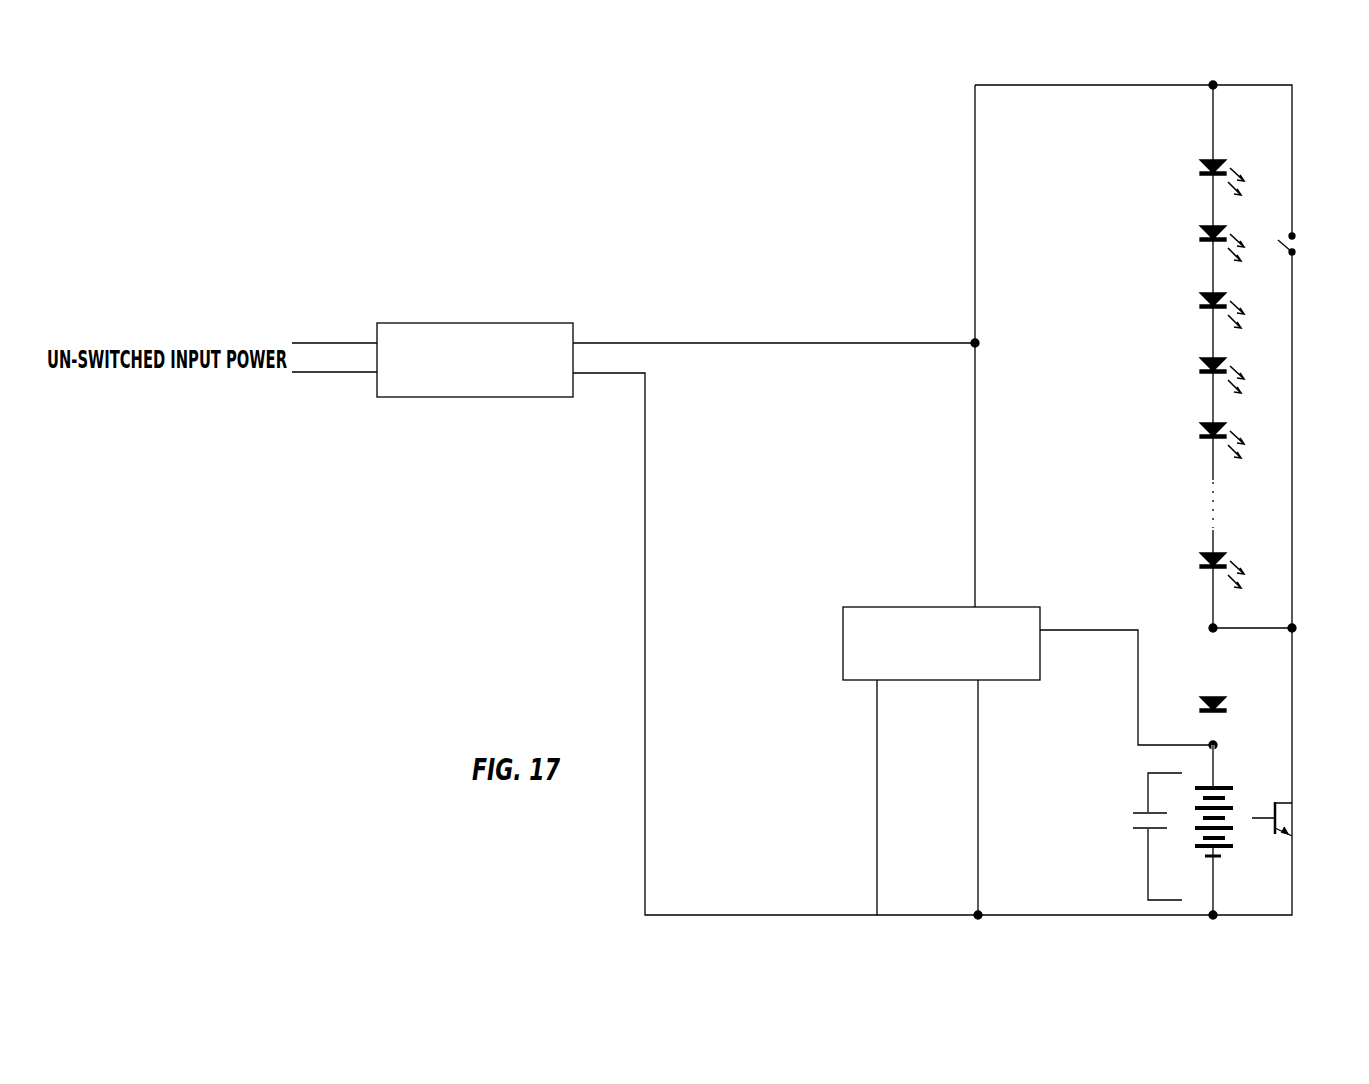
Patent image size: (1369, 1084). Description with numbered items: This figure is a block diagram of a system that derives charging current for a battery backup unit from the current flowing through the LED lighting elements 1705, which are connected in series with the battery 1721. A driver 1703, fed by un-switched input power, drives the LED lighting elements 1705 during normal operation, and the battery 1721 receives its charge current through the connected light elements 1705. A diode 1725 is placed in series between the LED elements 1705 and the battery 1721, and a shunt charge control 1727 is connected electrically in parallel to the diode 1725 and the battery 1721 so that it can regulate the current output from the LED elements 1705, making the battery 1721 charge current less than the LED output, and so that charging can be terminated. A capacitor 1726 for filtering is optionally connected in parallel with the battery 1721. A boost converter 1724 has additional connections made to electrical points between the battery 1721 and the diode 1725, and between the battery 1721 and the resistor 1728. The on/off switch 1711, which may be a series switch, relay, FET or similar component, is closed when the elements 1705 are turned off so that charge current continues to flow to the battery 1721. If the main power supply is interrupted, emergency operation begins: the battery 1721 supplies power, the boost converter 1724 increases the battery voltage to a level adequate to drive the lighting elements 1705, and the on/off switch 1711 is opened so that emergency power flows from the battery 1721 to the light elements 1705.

The driver 1703 is at (492, 366).
The LED lighting element 1705 is at (1203, 298).
The on/off switch 1711 is at (1298, 248).
The battery 1721 is at (1230, 845).
The boost converter 1724 is at (961, 656).
The diode 1725 is at (1225, 705).
The capacitor 1726 is at (1133, 820).
The shunt charge control 1727 is at (1283, 818).
The resistor 1728 is at (957, 915).